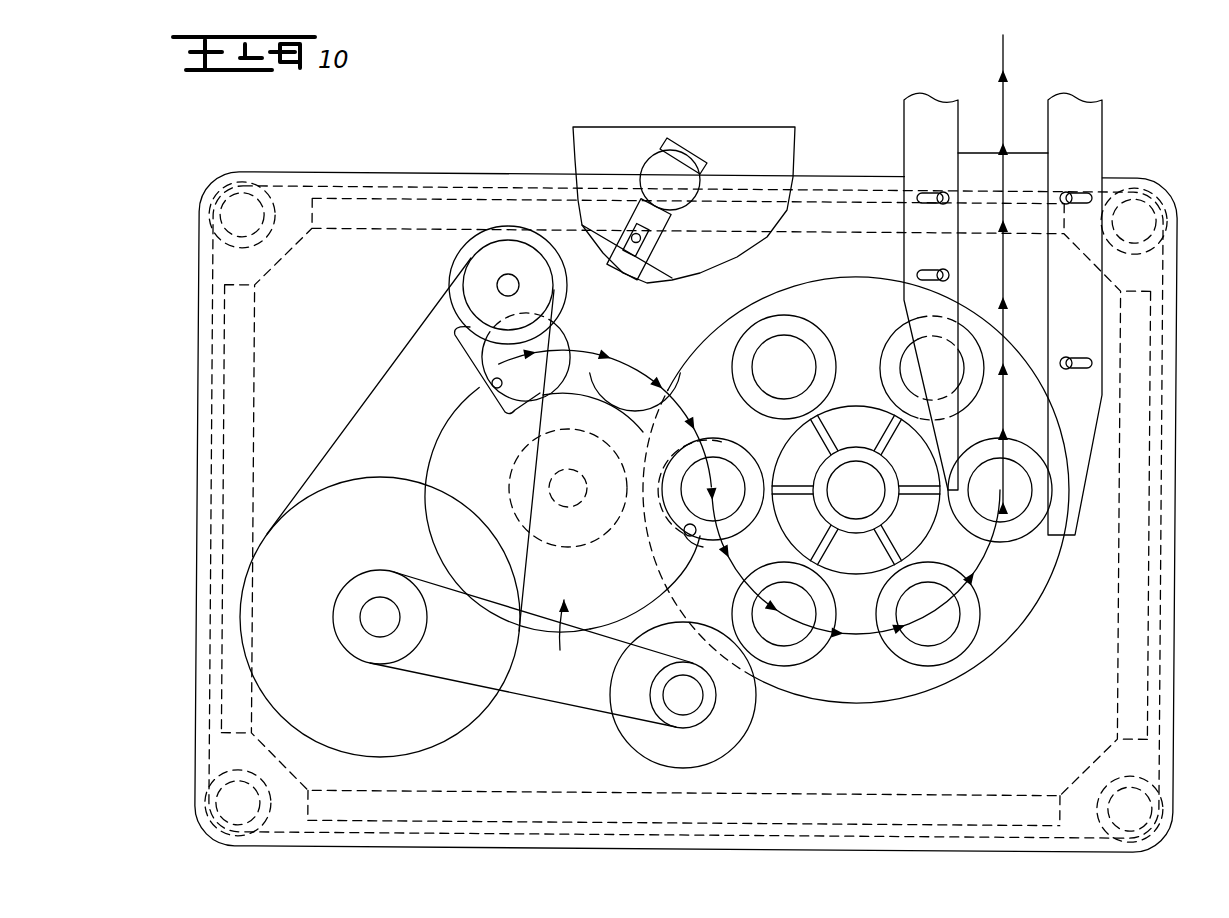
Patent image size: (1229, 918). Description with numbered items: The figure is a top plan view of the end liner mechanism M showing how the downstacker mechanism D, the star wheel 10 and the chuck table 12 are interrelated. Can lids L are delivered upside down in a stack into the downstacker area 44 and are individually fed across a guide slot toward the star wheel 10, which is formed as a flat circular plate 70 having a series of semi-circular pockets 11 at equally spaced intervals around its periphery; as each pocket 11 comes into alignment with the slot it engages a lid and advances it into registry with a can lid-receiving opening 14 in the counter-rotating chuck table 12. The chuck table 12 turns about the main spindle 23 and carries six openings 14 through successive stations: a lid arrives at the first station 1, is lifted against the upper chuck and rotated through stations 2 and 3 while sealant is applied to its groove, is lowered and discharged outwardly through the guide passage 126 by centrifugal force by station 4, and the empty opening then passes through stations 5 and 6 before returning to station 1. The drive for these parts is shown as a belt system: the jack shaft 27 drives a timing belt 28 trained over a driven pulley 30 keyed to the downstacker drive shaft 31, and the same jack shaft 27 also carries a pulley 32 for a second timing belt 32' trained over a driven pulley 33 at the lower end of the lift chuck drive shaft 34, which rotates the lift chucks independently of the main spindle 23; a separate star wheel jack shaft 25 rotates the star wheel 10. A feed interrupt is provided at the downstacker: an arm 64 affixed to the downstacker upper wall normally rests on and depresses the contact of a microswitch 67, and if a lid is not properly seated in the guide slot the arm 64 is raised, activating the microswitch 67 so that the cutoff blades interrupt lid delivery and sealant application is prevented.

The end liner mechanism M is at (1174, 675).
The guide passage 126 is at (1028, 390).
The arm 64 is at (622, 257).
The microswitch 67 is at (652, 240).
The driven pulley 30 is at (462, 258).
The downstacker mechanism D is at (458, 300).
The downstacker drive shaft 31 is at (518, 292).
The timing belt 28 is at (365, 403).
The can lid L is at (487, 352).
The downstacker area 44 is at (493, 380).
The flat circular plate 70 is at (435, 430).
The star wheel jack shaft 25 is at (582, 470).
The pockets 11 is at (688, 540).
The pulley 32 is at (380, 617).
The jack shaft 27 is at (368, 627).
The star wheel 10 is at (580, 633).
The timing belt 32' is at (531, 659).
The driven pulley 33 is at (698, 706).
The lift chuck drive shaft 34 is at (705, 720).
The chuck table 12 is at (905, 697).
The can lid-receiving opening 14 is at (945, 636).
The main spindle 23 is at (851, 474).
The first station 1 is at (718, 503).
The station two 2 is at (776, 617).
The station three 3 is at (920, 617).
The station four 4 is at (1009, 502).
The station five 5 is at (924, 369).
The station six 6 is at (776, 370).